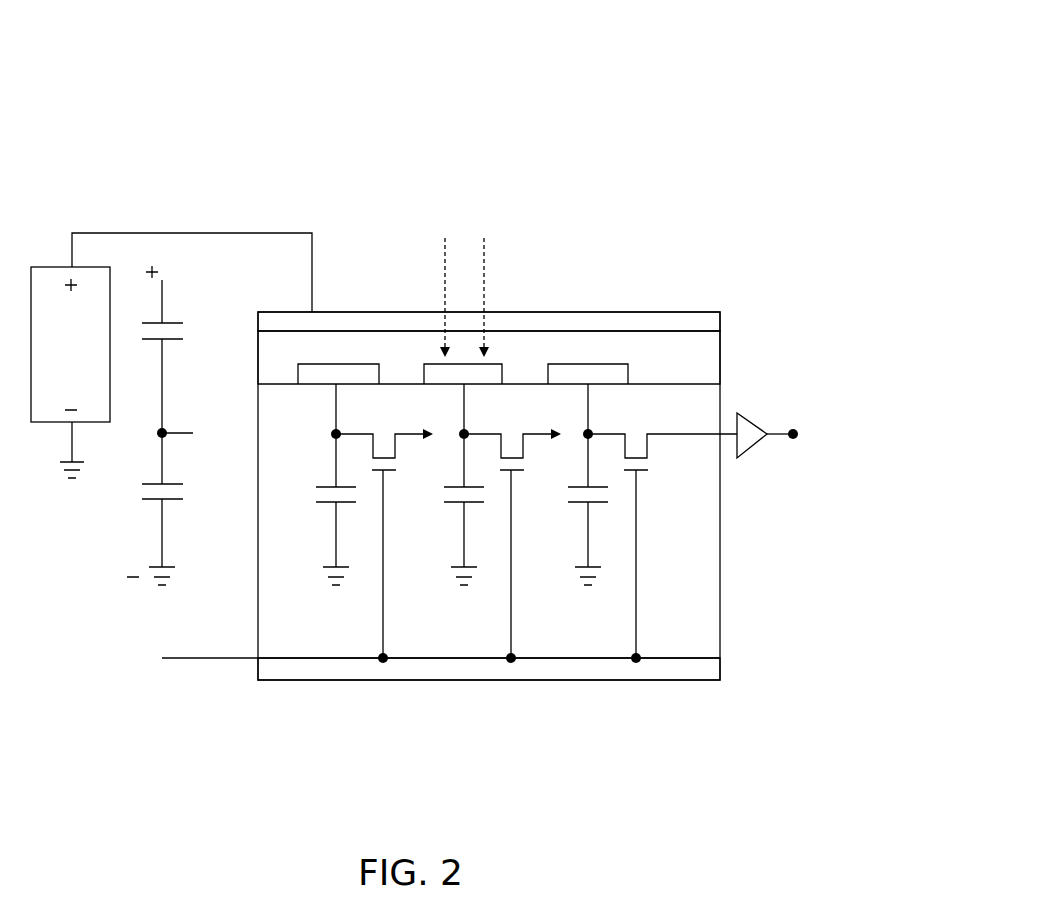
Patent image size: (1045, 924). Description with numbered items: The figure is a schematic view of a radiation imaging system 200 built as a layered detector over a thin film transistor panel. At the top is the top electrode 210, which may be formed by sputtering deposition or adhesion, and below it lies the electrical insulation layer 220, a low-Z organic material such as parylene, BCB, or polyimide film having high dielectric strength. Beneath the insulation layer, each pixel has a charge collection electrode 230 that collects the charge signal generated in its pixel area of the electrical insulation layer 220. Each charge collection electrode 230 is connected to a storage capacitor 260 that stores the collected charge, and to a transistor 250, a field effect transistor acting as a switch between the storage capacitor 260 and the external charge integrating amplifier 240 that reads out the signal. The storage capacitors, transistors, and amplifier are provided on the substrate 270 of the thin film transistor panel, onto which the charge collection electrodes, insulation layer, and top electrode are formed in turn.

The radiation imaging system 200 is at (602, 78).
The top electrode 210 is at (698, 323).
The electrical insulation layer 220 is at (698, 348).
The charge collection electrode 230 is at (605, 377).
The charge integrating amplifier 240 is at (769, 438).
The transistor 250 is at (660, 445).
The storage capacitor 260 is at (618, 500).
The substrate 270 is at (678, 668).